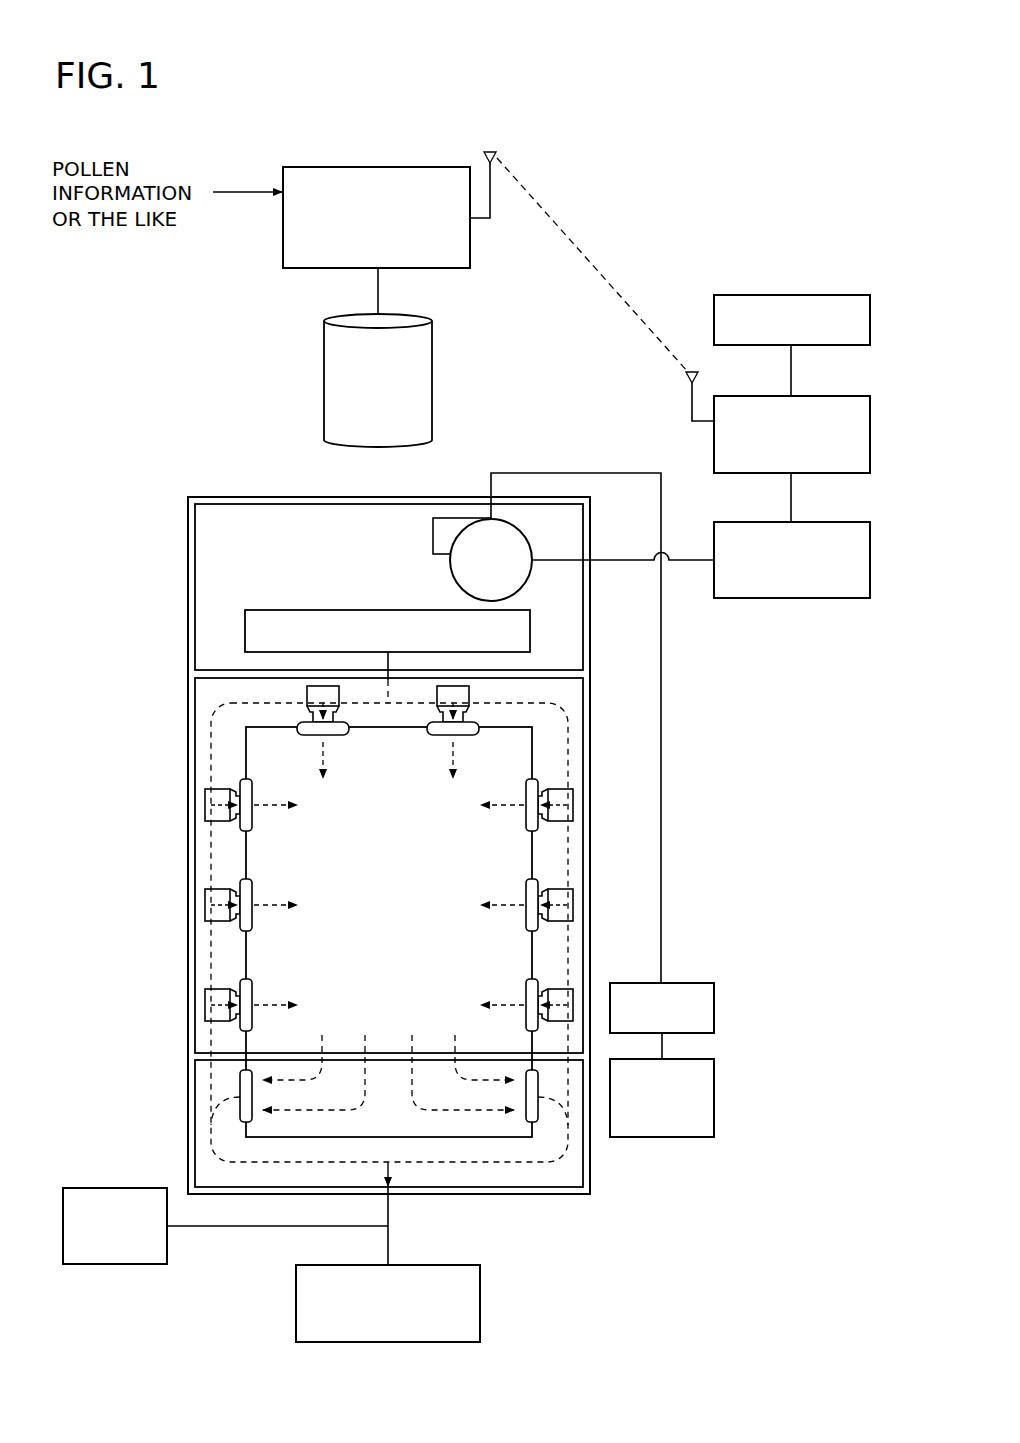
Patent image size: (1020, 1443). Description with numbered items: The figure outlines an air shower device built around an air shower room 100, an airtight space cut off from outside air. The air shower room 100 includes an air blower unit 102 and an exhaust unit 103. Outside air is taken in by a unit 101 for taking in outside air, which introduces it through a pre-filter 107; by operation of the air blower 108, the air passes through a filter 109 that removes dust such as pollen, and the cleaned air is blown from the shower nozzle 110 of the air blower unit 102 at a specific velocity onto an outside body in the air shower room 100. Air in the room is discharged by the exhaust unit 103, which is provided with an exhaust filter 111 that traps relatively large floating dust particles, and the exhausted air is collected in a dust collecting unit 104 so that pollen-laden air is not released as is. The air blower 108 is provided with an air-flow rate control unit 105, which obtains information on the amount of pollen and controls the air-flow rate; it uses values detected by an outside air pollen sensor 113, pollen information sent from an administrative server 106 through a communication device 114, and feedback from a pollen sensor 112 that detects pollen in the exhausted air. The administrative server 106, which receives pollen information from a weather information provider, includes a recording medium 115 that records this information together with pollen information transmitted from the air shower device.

The air shower room 100 is at (389, 944).
The unit for taking in outside air 101 is at (662, 1085).
The air blower unit 102 is at (188, 905).
The exhaust unit 103 is at (188, 1085).
The dust collecting unit 104 is at (388, 1264).
The air-flow rate control unit 105 is at (701, 535).
The administrative server 106 is at (485, 262).
The pre-filter 107 is at (662, 1008).
The air blower 108 is at (547, 728).
The filter 109 is at (387, 656).
The shower nozzle 110 is at (206, 804).
The exhaust filter 111 is at (538, 1108).
The pollen sensor 112 is at (225, 1226).
The outside air pollen sensor 113 is at (792, 320).
The communication device 114 is at (778, 409).
The recording medium 115 is at (378, 357).